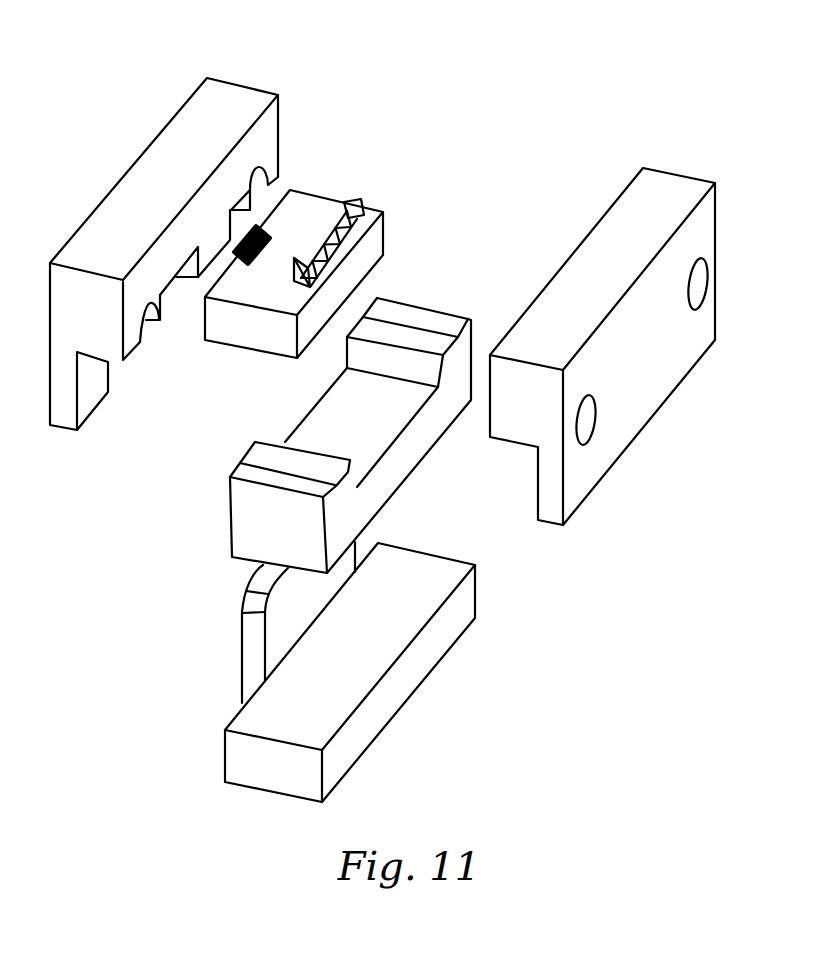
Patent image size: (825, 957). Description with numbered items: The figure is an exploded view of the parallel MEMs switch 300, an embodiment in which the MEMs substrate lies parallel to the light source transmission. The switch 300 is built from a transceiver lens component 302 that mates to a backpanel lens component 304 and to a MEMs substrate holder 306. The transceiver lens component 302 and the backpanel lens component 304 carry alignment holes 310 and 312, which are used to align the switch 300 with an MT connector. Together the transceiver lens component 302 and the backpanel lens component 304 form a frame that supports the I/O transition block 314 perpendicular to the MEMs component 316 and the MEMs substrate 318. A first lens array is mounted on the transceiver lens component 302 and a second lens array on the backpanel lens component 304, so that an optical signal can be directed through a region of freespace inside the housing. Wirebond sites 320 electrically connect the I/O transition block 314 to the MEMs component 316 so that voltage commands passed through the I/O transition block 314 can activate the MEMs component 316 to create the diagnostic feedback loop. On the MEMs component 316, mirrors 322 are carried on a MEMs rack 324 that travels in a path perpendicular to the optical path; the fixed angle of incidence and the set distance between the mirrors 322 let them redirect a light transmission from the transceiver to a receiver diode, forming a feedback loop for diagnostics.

The parallel MEMs switch 300 is at (712, 93).
The transceiver lens component 302 is at (635, 331).
The backpanel lens component 304 is at (245, 84).
The MEMs substrate holder 306 is at (430, 559).
The alignment hole 310 is at (588, 420).
The alignment hole 312 is at (700, 285).
The I/O transition block 314 is at (243, 660).
The MEMs component 316 is at (325, 281).
The MEMs substrate 318 is at (430, 315).
The wirebond sites 320 is at (266, 228).
The mirrors 322 is at (357, 201).
The MEMs rack 324 is at (345, 232).